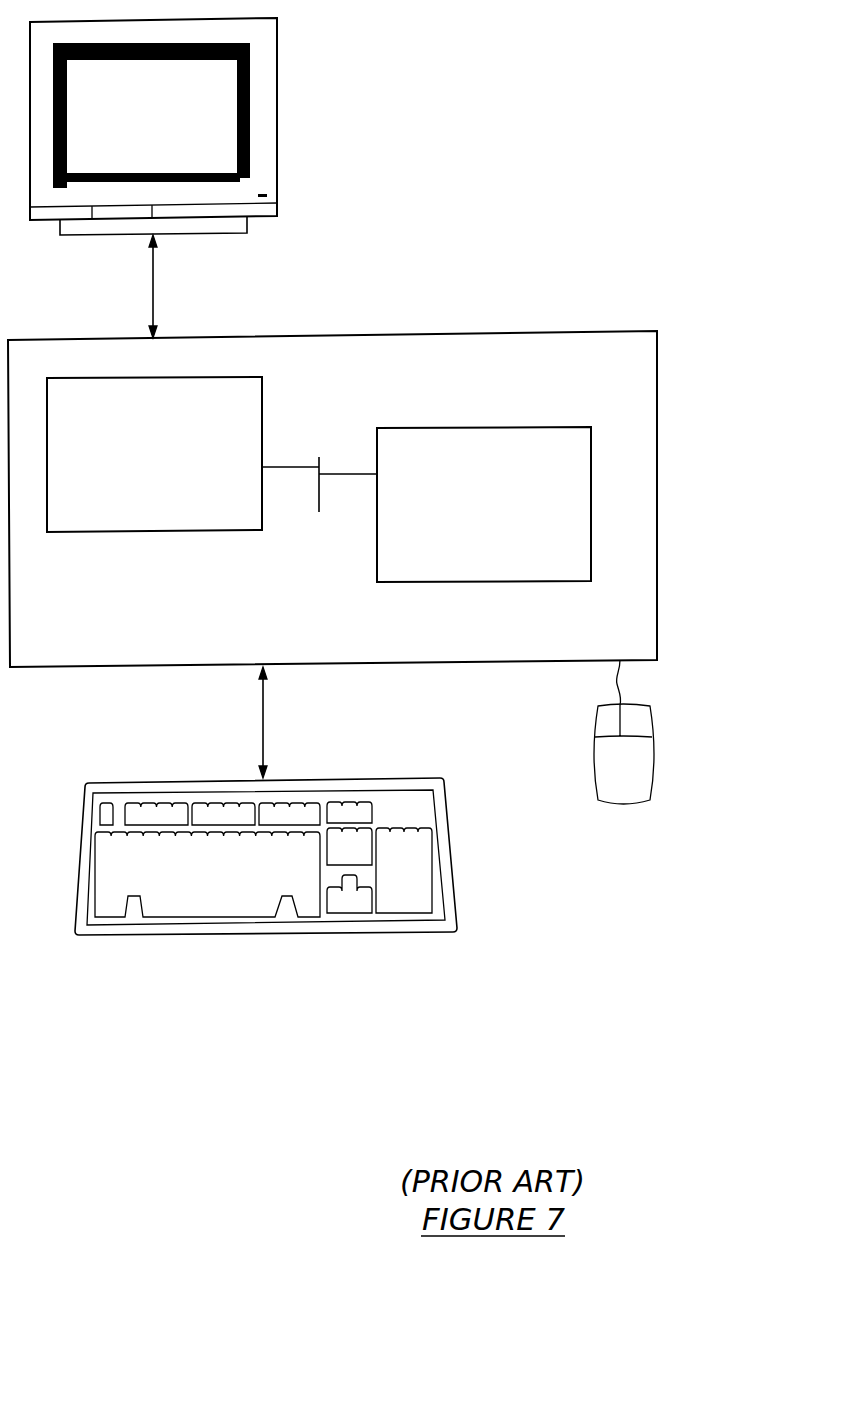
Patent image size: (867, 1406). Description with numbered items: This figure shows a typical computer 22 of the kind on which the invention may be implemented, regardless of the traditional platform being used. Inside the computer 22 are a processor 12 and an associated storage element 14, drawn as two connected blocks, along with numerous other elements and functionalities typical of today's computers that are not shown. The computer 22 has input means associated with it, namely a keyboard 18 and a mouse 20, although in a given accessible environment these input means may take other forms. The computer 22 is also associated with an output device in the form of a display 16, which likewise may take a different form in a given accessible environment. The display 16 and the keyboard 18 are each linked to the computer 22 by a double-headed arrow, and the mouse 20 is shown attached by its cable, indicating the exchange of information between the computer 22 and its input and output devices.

The processor 12 is at (170, 468).
The storage element 14 is at (498, 518).
The display 16 is at (163, 137).
The keyboard 18 is at (220, 883).
The mouse 20 is at (641, 789).
The computer 22 is at (657, 540).